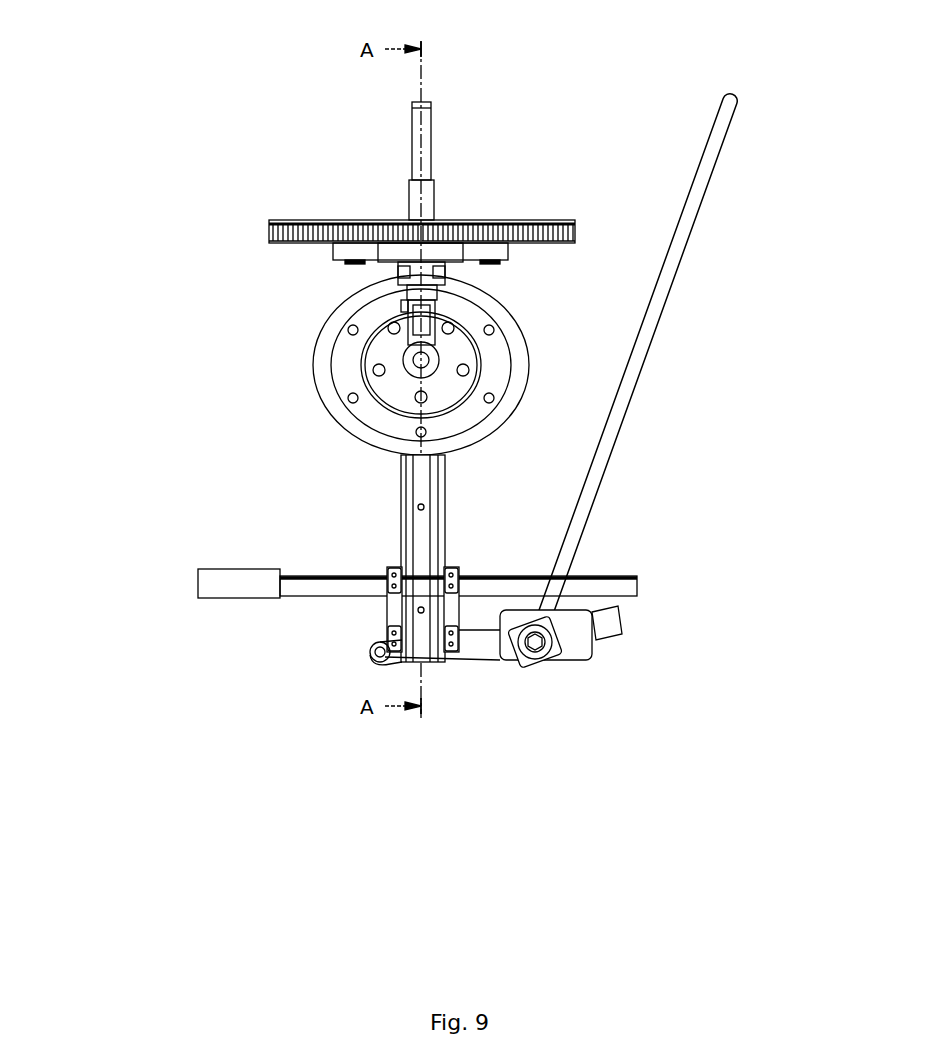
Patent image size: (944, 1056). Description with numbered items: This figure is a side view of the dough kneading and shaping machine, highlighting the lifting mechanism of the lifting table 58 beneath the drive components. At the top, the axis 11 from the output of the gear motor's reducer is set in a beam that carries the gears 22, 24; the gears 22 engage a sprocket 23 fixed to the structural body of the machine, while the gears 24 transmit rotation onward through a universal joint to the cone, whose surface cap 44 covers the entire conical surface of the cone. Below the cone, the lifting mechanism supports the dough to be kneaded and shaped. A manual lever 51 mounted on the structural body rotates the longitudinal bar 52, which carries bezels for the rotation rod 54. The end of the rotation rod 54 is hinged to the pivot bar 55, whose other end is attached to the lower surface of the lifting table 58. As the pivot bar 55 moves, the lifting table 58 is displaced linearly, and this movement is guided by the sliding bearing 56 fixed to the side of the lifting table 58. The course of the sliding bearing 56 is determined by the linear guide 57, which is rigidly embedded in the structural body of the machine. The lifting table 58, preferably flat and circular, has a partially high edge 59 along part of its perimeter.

The axis 11 is at (426, 150).
The gears 22 is at (357, 194).
The sprocket 23 is at (272, 228).
The gears 24 is at (441, 222).
The surface cap 44 is at (326, 360).
The manual lever 51 is at (644, 346).
The longitudinal bar 52 is at (541, 656).
The rotation rod 54 is at (480, 652).
The pivot bar 55 is at (374, 658).
The sliding bearing 56 is at (462, 568).
The linear guide 57 is at (448, 508).
The lifting table 58 is at (637, 590).
The high edge 59 is at (217, 583).